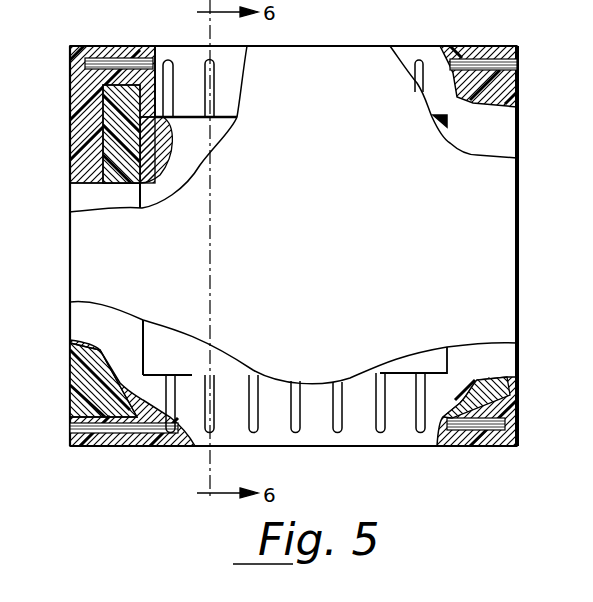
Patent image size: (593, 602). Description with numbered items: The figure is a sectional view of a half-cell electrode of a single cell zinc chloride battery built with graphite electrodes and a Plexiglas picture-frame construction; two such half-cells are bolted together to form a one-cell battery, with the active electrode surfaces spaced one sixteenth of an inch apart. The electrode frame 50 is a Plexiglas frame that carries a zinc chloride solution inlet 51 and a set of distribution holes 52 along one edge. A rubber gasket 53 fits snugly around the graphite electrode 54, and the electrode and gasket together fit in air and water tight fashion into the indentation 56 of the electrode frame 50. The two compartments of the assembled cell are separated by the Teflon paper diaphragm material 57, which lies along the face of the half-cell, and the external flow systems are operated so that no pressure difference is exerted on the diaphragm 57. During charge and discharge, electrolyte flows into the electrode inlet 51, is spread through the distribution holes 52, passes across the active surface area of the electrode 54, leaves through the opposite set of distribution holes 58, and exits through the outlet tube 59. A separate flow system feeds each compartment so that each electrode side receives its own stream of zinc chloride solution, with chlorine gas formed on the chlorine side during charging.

The electrode frame 50 is at (70, 103).
The zinc chloride solution inlet 51 is at (77, 432).
The distribution holes 52 is at (173, 383).
The rubber gasket 53 is at (113, 138).
The graphite electrode 54 is at (187, 173).
The indentation 56 is at (477, 87).
The Teflon paper diaphragm material 57 is at (487, 247).
The distribution holes 58 is at (213, 88).
The outlet tube 59 is at (520, 63).